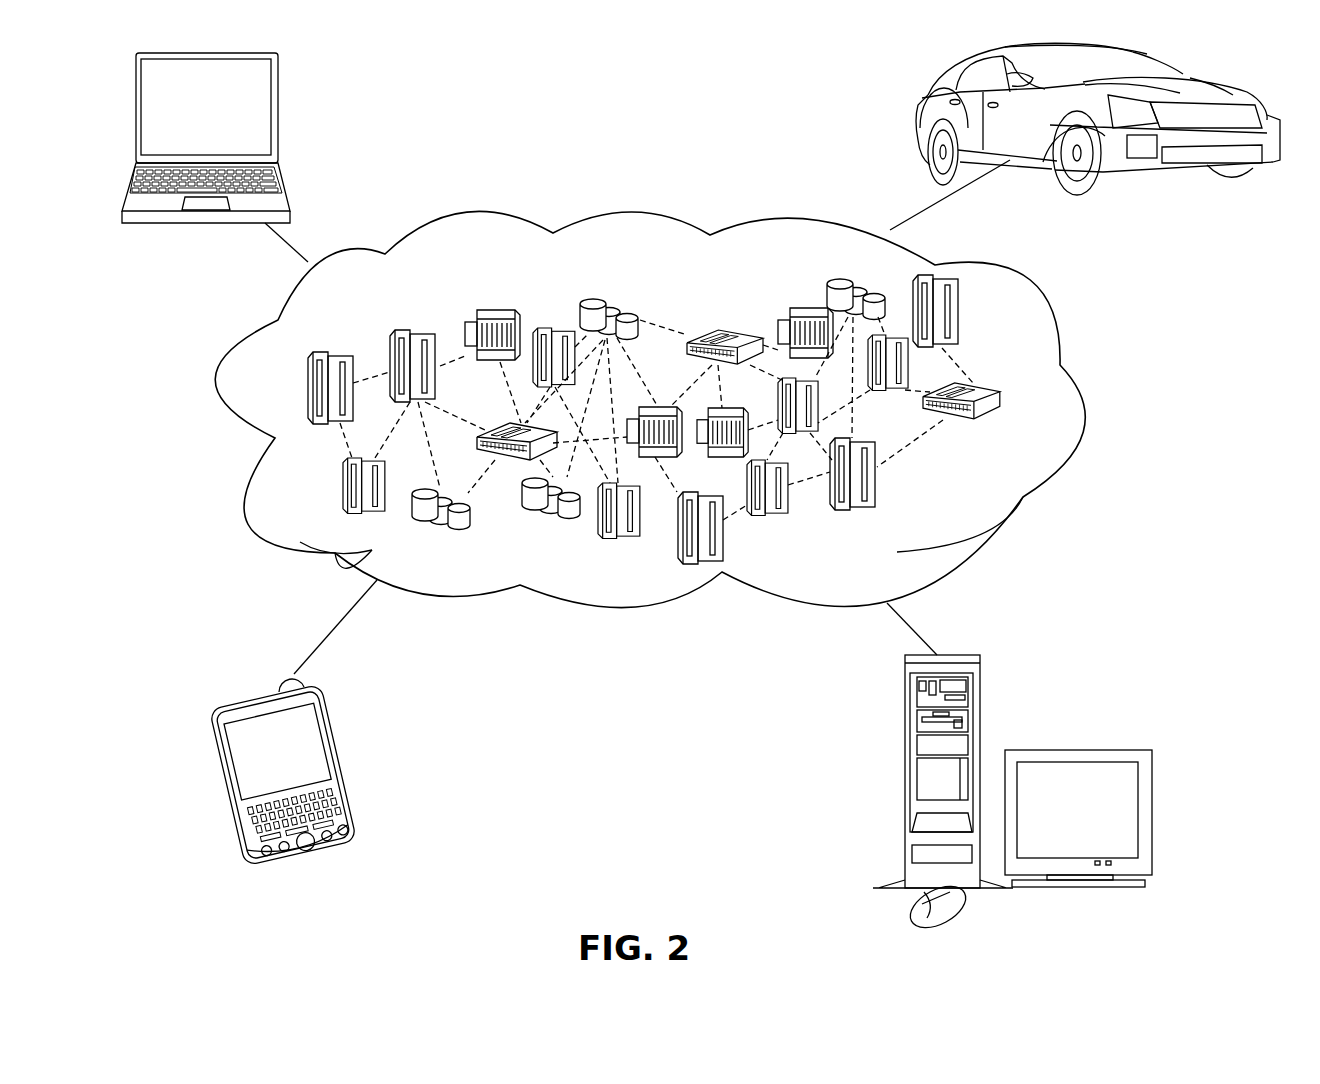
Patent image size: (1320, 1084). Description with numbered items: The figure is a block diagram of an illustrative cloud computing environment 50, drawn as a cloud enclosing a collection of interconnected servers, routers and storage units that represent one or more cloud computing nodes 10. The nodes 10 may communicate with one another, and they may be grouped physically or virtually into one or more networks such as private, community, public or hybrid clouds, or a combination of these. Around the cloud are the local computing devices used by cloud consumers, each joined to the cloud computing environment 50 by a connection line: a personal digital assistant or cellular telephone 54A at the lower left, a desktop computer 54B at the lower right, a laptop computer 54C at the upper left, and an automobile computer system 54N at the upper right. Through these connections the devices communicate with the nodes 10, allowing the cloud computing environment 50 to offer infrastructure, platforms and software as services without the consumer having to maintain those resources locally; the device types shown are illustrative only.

The cloud computing node 10 is at (682, 409).
The cloud computing environment 50 is at (1072, 402).
The personal digital assistant (PDA) or cellular telephone 54A is at (340, 722).
The desktop computer 54B is at (903, 717).
The laptop computer 54C is at (277, 92).
The automobile computer system 54N is at (920, 112).